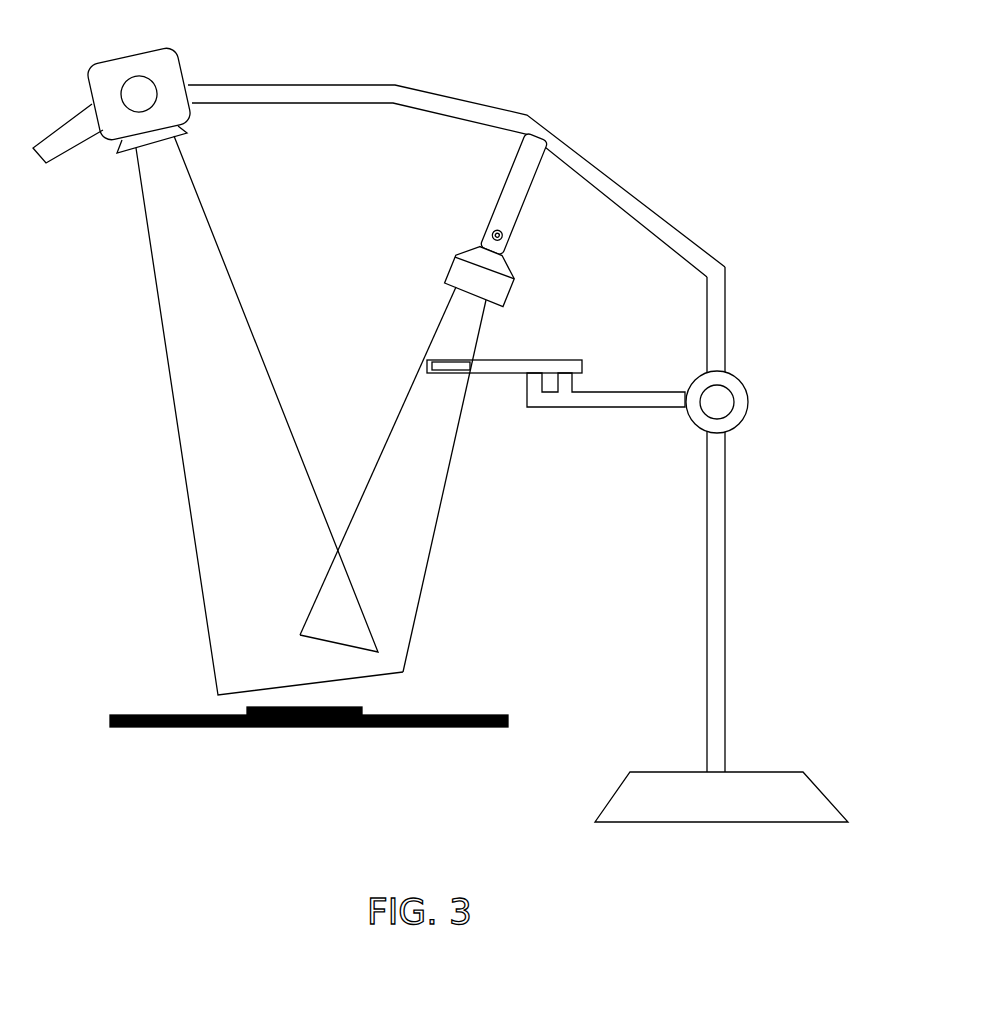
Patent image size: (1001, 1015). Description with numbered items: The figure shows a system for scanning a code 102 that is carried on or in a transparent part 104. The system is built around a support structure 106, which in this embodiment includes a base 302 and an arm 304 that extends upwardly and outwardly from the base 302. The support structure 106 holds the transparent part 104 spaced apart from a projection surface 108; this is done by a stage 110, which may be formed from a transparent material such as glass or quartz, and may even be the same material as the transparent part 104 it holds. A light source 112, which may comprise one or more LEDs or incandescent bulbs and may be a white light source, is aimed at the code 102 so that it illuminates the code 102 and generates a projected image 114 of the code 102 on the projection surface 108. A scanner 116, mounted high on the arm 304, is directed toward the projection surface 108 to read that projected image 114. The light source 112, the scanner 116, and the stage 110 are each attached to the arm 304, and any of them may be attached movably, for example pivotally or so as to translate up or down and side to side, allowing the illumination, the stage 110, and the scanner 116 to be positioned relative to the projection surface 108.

The code 102 is at (442, 360).
The transparent part 104 is at (502, 377).
The support structure 106 is at (704, 194).
The projection surface 108 is at (418, 728).
The stage 110 is at (607, 408).
The light source 112 is at (500, 188).
The projected image 114 is at (348, 707).
The scanner 116 is at (122, 50).
The base 302 is at (656, 812).
The arm 304 is at (287, 85).